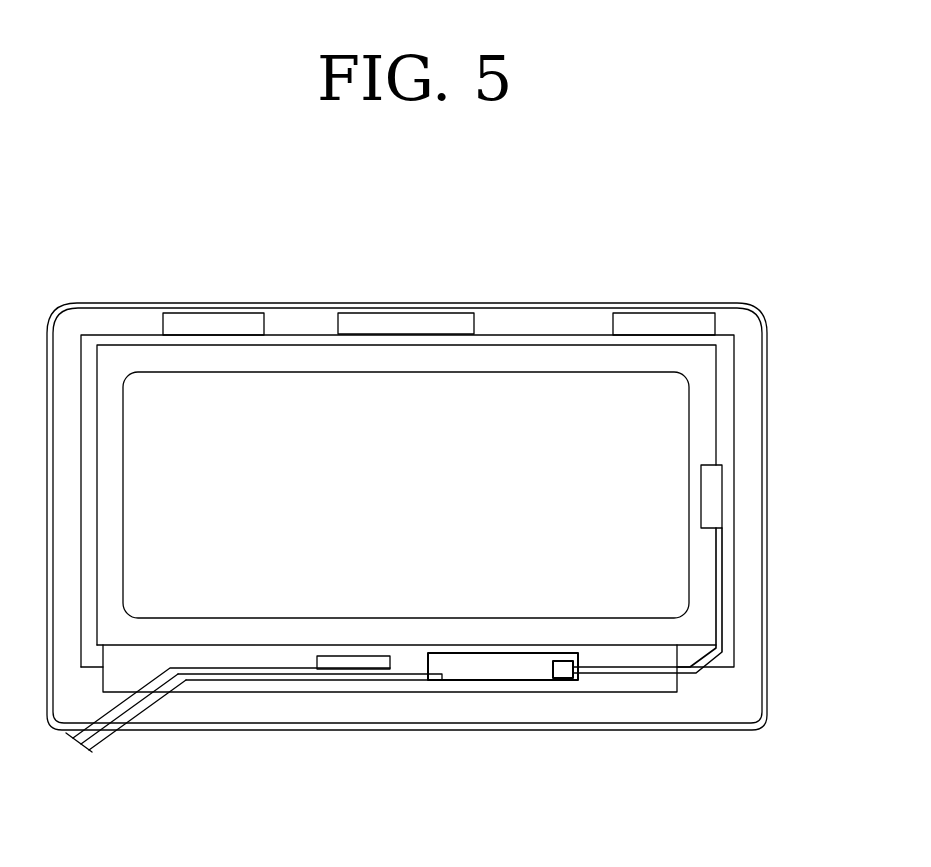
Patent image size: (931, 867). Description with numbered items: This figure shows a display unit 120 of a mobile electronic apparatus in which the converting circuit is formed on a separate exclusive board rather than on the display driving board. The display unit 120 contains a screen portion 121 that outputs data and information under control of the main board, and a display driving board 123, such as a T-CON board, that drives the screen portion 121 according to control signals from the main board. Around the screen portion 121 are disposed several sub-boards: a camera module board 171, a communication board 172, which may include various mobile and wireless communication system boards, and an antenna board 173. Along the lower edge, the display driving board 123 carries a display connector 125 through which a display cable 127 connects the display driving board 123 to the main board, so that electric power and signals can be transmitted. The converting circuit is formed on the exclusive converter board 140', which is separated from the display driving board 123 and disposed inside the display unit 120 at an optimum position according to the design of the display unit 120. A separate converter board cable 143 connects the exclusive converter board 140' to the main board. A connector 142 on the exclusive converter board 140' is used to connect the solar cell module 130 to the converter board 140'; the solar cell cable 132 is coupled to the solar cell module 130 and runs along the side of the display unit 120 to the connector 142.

The display unit 120 is at (735, 298).
The screen portion 121 is at (300, 400).
The display driving board 123 is at (258, 655).
The display connector 125 is at (365, 662).
The display cable 127 is at (90, 741).
The solar cell module 130 is at (723, 408).
The solar cell cable 132 is at (718, 580).
The exclusive converter board 140' is at (503, 716).
The connector 142 is at (560, 668).
The converter board cable 143 is at (402, 676).
The camera module board 171 is at (382, 318).
The communication board 172 is at (680, 318).
The antenna board 173 is at (213, 320).